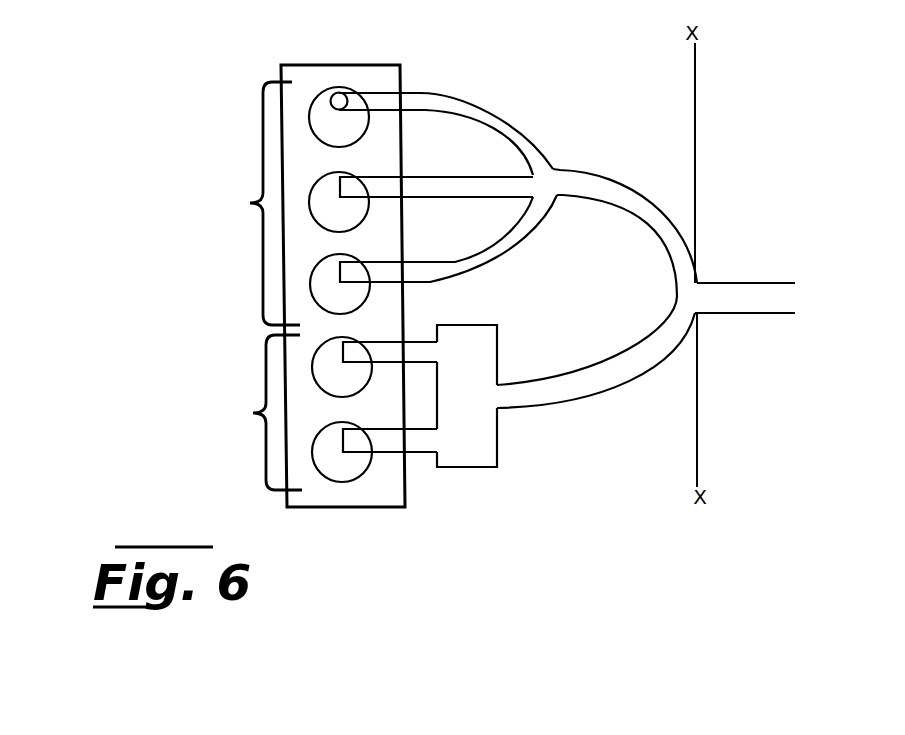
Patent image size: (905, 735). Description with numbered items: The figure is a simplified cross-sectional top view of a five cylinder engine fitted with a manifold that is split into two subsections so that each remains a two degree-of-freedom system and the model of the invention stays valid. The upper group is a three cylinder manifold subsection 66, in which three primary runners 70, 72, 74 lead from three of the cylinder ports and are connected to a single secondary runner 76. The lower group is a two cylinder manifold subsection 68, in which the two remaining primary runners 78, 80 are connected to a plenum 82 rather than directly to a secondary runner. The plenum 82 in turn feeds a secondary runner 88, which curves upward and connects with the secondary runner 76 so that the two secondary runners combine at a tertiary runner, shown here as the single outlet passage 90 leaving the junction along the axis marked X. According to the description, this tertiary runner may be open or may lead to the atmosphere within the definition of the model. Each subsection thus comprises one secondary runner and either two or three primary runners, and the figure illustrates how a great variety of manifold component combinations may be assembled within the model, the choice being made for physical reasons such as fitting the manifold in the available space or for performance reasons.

The three cylinder manifold subsection 66 is at (259, 203).
The two cylinder manifold subsection 68 is at (260, 412).
The primary runner 70 is at (477, 97).
The primary runner 72 is at (455, 177).
The primary runner 74 is at (435, 260).
The secondary runner 76 is at (610, 177).
The primary runner 78 is at (420, 342).
The primary runner 80 is at (431, 453).
The plenum 82 is at (490, 325).
The secondary runner 88 is at (565, 376).
The common outlet conduit 90 is at (745, 282).